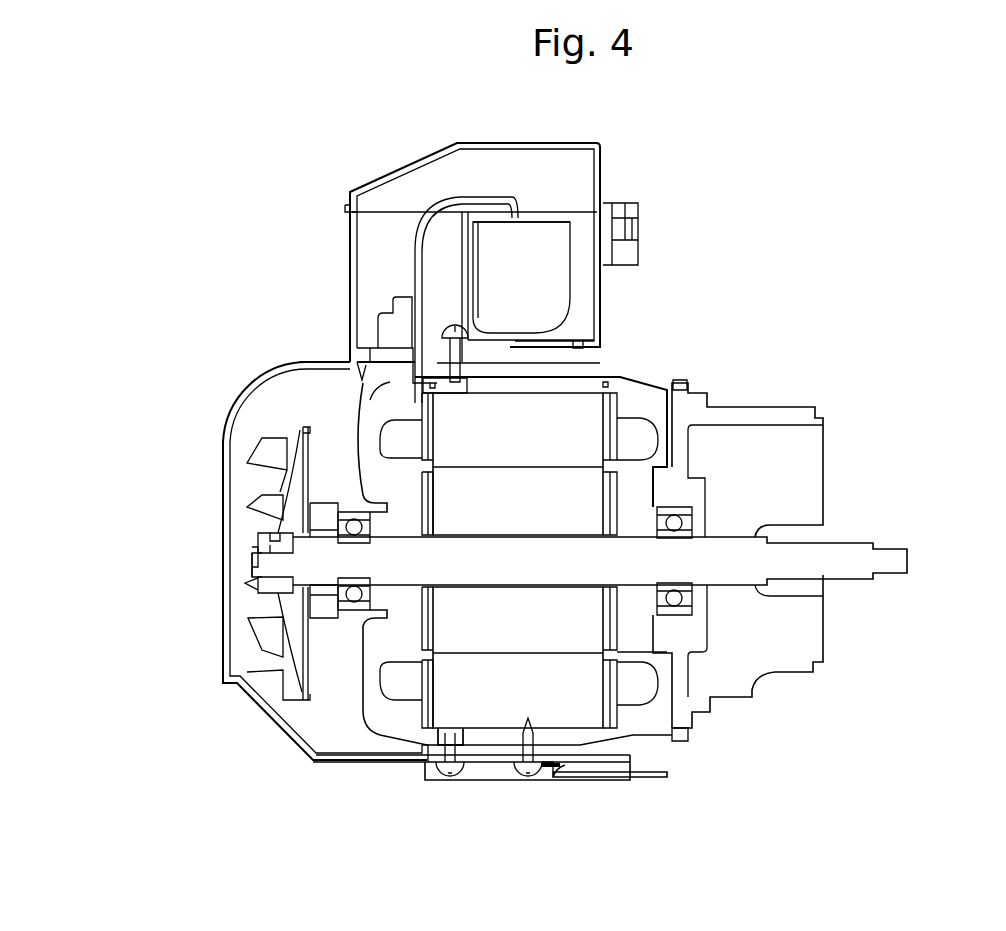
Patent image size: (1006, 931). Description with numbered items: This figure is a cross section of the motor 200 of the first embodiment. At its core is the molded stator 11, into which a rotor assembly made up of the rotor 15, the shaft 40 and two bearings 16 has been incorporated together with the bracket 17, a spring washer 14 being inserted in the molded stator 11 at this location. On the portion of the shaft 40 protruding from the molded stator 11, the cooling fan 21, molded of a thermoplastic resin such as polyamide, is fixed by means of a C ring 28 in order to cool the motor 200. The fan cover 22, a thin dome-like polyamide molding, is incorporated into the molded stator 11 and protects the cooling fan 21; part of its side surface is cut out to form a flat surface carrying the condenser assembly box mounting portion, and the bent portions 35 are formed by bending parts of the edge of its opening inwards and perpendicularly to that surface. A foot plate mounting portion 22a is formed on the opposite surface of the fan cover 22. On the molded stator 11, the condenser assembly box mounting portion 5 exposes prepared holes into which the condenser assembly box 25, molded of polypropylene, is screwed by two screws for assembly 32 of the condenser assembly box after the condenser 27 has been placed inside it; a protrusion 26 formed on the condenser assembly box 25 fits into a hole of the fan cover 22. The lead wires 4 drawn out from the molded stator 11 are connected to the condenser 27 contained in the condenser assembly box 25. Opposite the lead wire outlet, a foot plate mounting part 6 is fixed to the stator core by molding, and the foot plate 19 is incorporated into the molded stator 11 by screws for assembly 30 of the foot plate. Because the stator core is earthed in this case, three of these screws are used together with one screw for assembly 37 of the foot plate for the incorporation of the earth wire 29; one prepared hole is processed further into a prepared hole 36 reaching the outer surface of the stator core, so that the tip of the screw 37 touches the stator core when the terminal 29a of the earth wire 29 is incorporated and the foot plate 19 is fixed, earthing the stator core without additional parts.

The motor 200 is at (815, 198).
The lead wires 4 is at (502, 193).
The bent portions 35 is at (488, 365).
The condenser 27 is at (567, 297).
The condenser assembly box 25 is at (607, 320).
The screws for assembly of the condenser assembly box 32 is at (450, 330).
The condenser assembly box mounting portion 5 is at (480, 375).
The bracket 17 is at (783, 407).
The shaft 40 is at (910, 548).
The bearings 16 is at (353, 511).
The rotor 15 is at (617, 627).
The spring washer 14 is at (337, 523).
The cooling fan 21 is at (280, 432).
The protrusion 26 is at (357, 380).
The C ring 28 is at (253, 548).
The fan cover 22 is at (272, 730).
The molded stator 11 is at (373, 737).
The foot plate mounting portion 22a is at (418, 773).
The screws for assembly of the foot plate 30 is at (430, 767).
The foot plate 19 is at (458, 783).
The foot plate mounting part 6 is at (467, 747).
The screw for assembly of the foot plate for the incorporation of the earth wire 37 is at (532, 777).
The prepared hole 36 is at (543, 765).
The terminal 29a is at (552, 767).
The earth wire 29 is at (647, 777).